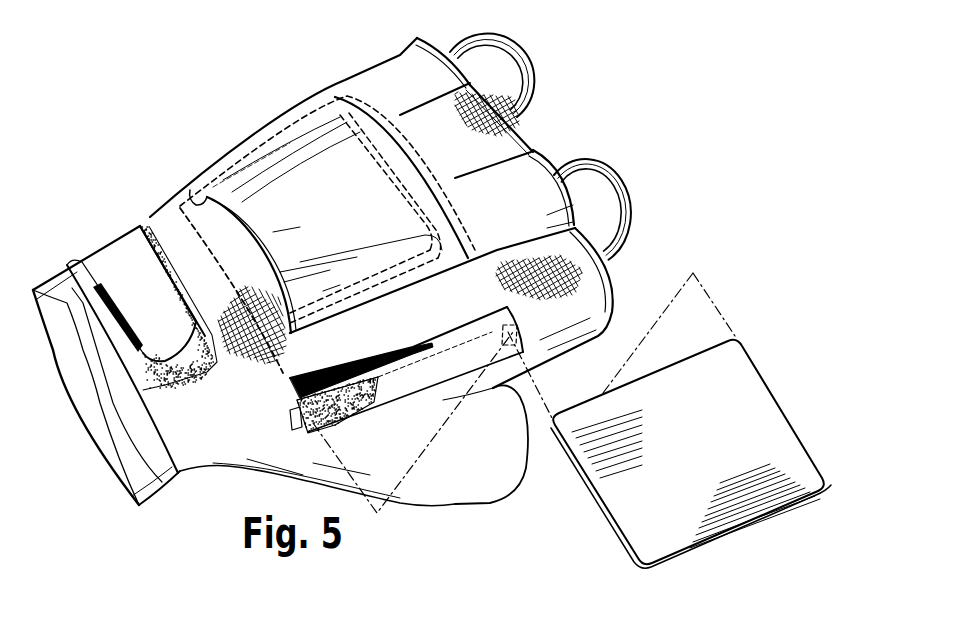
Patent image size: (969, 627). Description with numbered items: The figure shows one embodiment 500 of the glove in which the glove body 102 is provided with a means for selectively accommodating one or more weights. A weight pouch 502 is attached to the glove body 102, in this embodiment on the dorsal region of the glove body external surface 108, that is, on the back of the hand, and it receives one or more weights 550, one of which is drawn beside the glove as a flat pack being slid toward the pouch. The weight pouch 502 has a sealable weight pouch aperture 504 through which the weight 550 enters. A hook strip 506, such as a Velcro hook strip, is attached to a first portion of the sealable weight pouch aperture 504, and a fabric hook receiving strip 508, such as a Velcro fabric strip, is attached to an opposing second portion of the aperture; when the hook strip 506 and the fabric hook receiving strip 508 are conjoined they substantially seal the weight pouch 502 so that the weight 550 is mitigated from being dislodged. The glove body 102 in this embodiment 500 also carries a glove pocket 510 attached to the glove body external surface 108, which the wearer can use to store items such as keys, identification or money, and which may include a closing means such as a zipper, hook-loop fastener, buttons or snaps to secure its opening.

The embodiment 500 is at (172, 82).
The glove body 102 is at (170, 245).
The glove body external surface 108 is at (153, 218).
The weight pouch 502 is at (348, 90).
The glove pocket 510 is at (303, 187).
The hook strip 506 is at (349, 362).
The fabric hook receiving strip 508 is at (290, 379).
The sealable weight pouch aperture 504 is at (280, 411).
The weight 550 is at (712, 458).